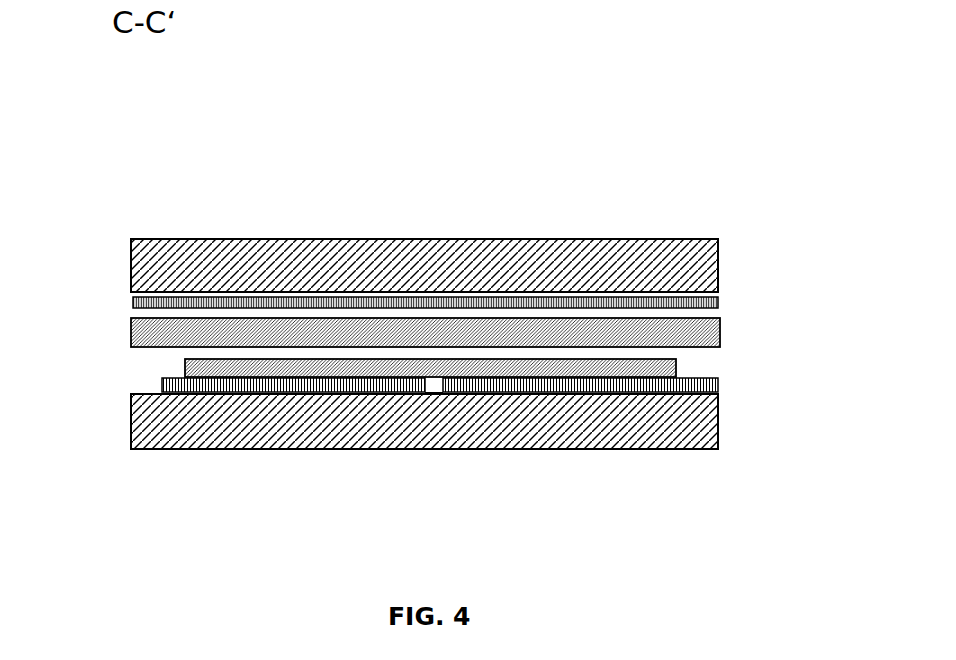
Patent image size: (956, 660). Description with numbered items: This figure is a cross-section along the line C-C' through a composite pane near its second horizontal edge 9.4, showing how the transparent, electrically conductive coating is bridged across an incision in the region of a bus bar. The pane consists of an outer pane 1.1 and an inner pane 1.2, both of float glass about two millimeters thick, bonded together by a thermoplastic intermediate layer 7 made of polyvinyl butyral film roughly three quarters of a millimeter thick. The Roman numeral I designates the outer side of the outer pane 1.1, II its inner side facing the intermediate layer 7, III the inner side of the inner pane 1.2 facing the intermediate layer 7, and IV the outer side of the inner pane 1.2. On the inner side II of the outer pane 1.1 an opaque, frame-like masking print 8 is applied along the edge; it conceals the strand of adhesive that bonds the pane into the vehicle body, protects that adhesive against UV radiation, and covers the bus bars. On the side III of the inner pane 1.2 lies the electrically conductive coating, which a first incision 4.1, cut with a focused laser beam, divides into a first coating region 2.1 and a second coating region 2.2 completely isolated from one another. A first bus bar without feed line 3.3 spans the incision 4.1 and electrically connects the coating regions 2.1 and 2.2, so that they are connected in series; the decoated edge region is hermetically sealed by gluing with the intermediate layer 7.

The outer pane 1.1 is at (623, 255).
The inner pane 1.2 is at (677, 425).
The masking print 8 is at (146, 301).
The intermediate layer 7 is at (698, 333).
The first bus bar without feed line 3.3 is at (200, 368).
The first coating region 2.1 is at (212, 387).
The second coating region 2.2 is at (712, 387).
The first incision 4.1 is at (433, 388).
The second horizontal edge 9.4 is at (120, 409).
The outer side of the outer pane I is at (508, 236).
The inner side of the outer pane II is at (686, 291).
The inner side of the inner pane III is at (666, 390).
The outer side of the inner pane IV is at (477, 451).